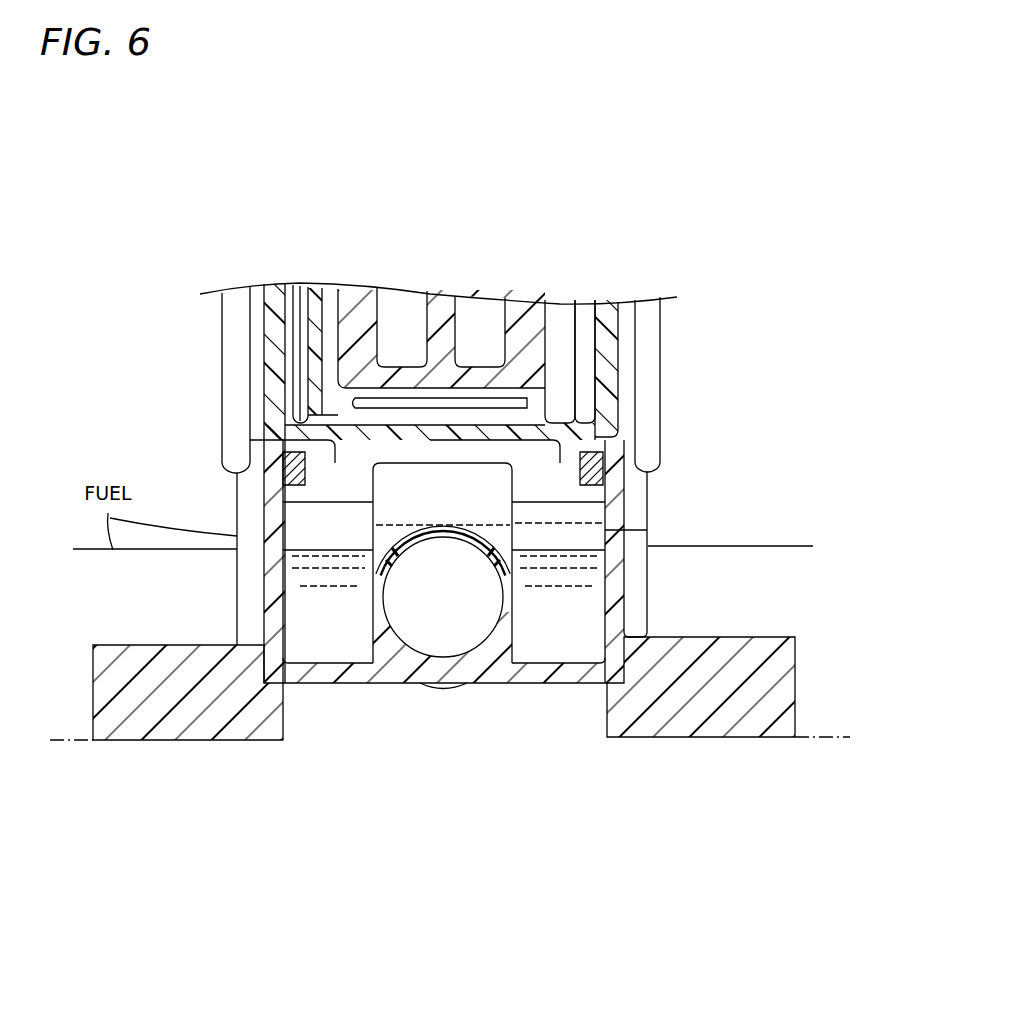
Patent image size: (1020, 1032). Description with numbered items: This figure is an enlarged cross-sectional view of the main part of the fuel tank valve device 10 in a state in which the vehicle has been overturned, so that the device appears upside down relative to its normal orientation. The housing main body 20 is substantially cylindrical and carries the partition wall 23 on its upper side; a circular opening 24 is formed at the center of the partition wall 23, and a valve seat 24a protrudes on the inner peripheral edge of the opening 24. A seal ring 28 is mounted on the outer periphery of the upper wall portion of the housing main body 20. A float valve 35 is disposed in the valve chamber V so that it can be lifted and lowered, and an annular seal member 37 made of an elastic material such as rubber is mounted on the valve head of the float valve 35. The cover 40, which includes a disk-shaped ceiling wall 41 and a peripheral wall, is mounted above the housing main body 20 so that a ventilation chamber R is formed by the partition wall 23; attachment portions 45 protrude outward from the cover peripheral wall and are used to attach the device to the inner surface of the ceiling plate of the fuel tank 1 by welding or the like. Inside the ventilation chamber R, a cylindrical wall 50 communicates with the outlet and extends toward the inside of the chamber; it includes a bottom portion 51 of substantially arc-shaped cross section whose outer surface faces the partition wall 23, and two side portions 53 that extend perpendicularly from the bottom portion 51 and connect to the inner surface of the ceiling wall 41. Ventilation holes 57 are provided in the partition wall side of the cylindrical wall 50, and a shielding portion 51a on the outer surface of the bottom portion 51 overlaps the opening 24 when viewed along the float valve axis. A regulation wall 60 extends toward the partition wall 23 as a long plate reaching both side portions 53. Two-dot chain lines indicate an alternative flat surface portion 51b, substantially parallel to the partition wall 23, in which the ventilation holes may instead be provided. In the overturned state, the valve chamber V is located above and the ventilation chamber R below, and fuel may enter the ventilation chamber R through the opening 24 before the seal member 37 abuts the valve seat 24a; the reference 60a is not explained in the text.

The fuel tank 1 is at (810, 740).
The fuel tank valve device 10 is at (645, 748).
The housing main body 20 is at (632, 327).
The partition wall 23 is at (562, 397).
The opening 24 is at (227, 467).
The valve seat 24a is at (264, 428).
The seal ring 28 is at (620, 431).
The float valve 35 is at (478, 312).
The seal member 37 is at (358, 406).
The cover 40 is at (812, 645).
The ceiling wall 41 is at (328, 675).
The attachment portions 45 is at (125, 702).
The cylindrical wall 50 is at (650, 530).
The bottom portion 51 is at (433, 517).
The shielding portion 51a is at (500, 537).
The flat surface portion 51b is at (393, 523).
The side portions 53 is at (375, 633).
The ventilation holes 57 is at (420, 530).
The regulation wall 60 is at (502, 518).
The seal member 60a is at (600, 476).
The ventilation chamber R is at (312, 539).
The valve chamber V is at (545, 425).